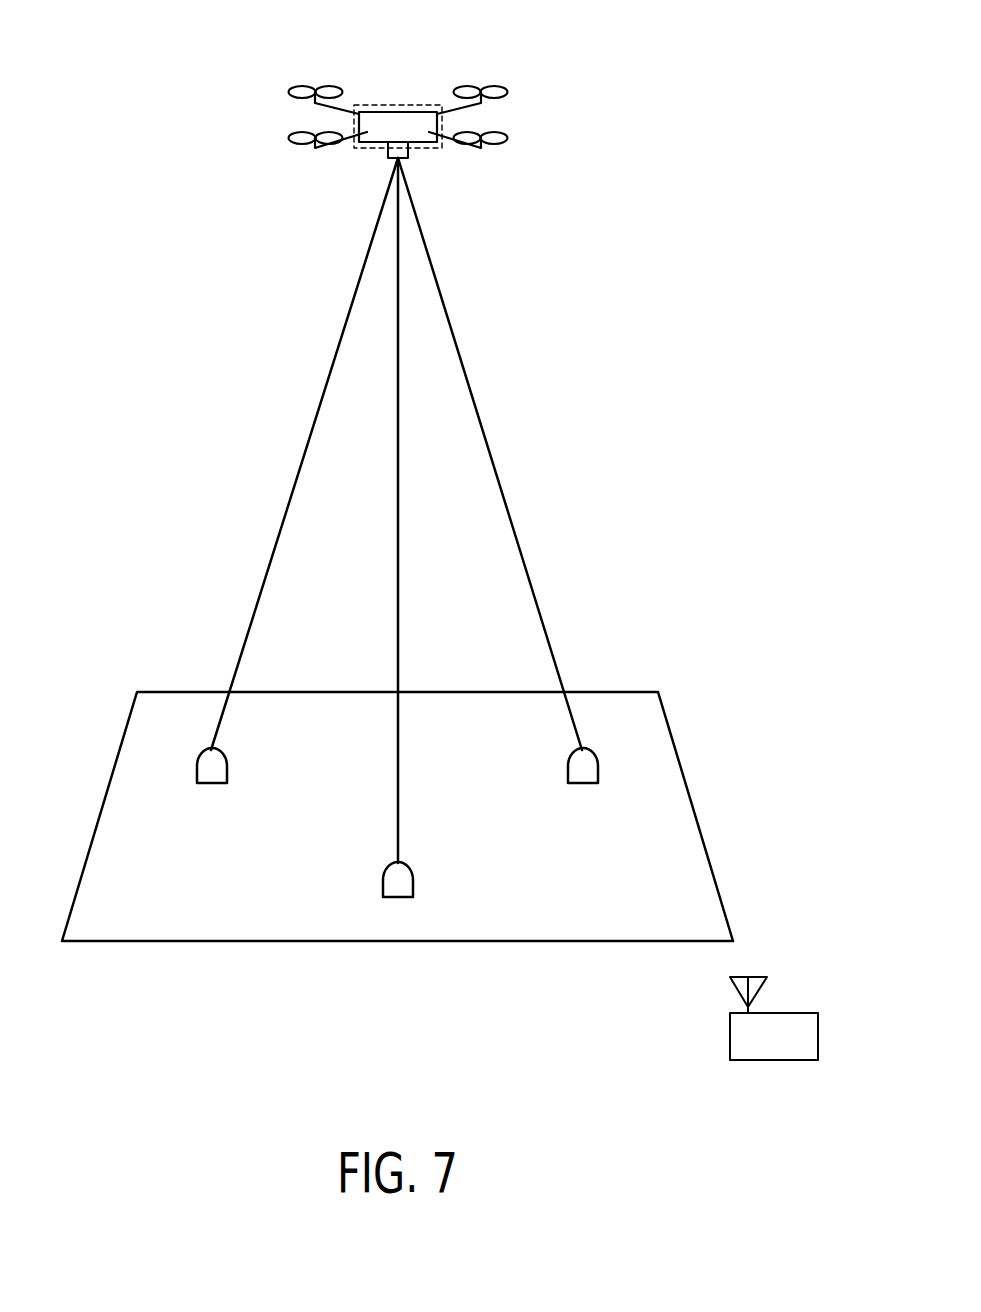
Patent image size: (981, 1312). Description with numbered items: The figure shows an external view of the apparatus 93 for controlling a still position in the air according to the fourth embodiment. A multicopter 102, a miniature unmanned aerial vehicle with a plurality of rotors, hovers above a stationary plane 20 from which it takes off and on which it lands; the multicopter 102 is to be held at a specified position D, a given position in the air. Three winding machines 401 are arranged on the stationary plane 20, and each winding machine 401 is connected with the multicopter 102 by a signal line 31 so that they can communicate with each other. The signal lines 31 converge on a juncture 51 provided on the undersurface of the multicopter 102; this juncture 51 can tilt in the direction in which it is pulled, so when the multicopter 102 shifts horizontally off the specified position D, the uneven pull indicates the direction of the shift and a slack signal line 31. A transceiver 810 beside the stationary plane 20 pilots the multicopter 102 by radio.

The apparatus for controlling a still position in the air 93 is at (74, 42).
The multicopter 102 is at (403, 122).
The specified position D is at (362, 149).
The juncture 51 is at (410, 158).
The signal lines 31 is at (502, 487).
The winding machines 401 is at (573, 755).
The stationary plane 20 is at (613, 713).
The transceiver 810 is at (783, 1023).